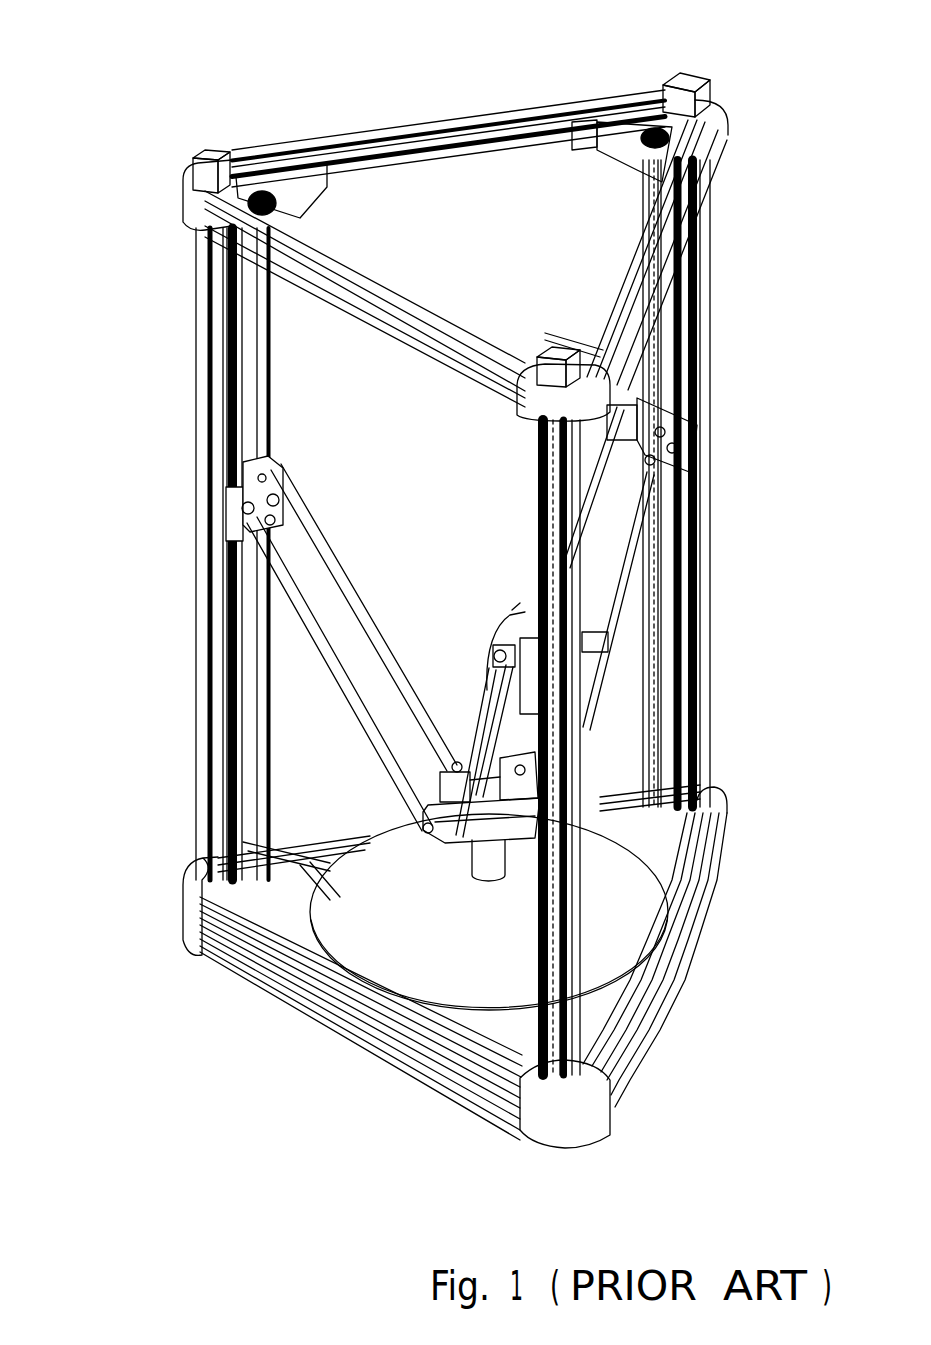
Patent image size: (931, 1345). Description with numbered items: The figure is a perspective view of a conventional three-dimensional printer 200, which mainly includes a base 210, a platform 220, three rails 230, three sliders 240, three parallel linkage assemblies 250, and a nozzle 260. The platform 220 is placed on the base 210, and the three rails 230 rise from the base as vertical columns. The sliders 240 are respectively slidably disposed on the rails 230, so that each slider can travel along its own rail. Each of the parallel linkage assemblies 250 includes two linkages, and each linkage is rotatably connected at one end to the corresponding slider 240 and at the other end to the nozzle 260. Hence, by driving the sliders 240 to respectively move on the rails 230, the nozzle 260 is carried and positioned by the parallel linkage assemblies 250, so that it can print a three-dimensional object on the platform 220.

The 3D printer 200 is at (160, 24).
The base 210 is at (705, 922).
The platform 220 is at (620, 948).
The rails 230 is at (197, 612).
The sliders 240 is at (232, 490).
The parallel linkage assemblies 250 is at (380, 585).
The nozzle 260 is at (485, 862).